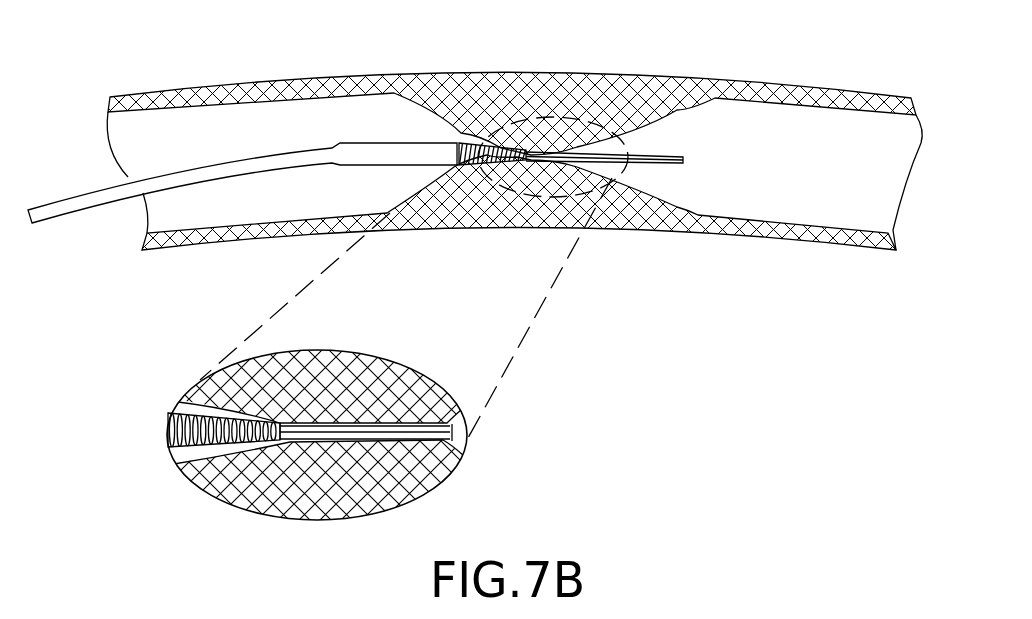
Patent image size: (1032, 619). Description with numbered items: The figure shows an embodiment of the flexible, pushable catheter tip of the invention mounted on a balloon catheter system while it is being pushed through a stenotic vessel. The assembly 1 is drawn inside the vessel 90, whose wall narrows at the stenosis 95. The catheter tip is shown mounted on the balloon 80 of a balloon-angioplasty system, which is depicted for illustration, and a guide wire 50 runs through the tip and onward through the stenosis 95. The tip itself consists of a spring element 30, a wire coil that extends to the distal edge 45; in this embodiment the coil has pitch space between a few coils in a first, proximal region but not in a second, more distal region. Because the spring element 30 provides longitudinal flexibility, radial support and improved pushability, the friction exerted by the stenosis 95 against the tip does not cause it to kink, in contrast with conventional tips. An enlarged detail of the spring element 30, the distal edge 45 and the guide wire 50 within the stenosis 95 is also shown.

The medical device / catheter assembly 1 is at (501, 147).
The spring element 30 is at (250, 427).
The distal edge 45 is at (283, 423).
The guide wire 50 is at (666, 163).
The balloon 80 is at (369, 148).
The vessel wall 90 is at (781, 230).
The stenosis 95 is at (627, 98).